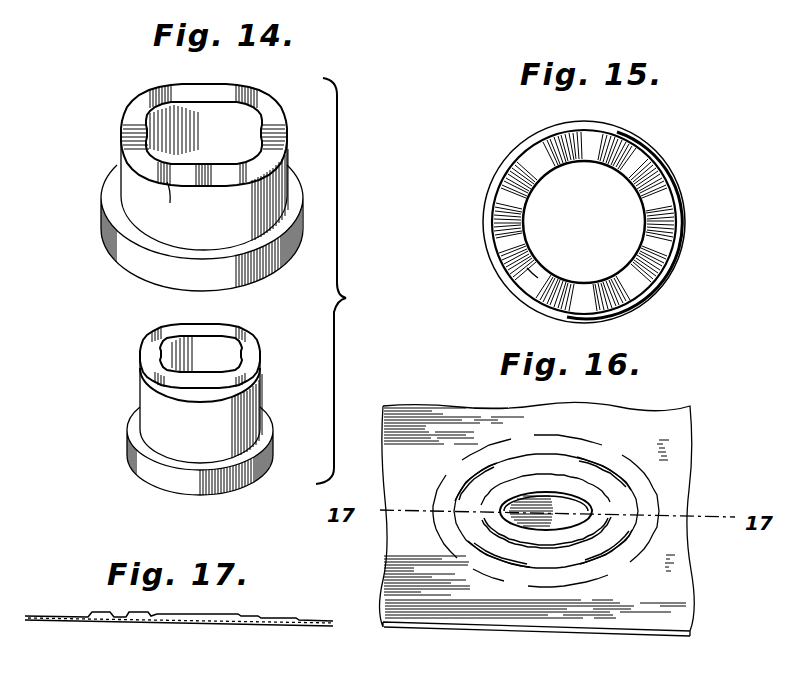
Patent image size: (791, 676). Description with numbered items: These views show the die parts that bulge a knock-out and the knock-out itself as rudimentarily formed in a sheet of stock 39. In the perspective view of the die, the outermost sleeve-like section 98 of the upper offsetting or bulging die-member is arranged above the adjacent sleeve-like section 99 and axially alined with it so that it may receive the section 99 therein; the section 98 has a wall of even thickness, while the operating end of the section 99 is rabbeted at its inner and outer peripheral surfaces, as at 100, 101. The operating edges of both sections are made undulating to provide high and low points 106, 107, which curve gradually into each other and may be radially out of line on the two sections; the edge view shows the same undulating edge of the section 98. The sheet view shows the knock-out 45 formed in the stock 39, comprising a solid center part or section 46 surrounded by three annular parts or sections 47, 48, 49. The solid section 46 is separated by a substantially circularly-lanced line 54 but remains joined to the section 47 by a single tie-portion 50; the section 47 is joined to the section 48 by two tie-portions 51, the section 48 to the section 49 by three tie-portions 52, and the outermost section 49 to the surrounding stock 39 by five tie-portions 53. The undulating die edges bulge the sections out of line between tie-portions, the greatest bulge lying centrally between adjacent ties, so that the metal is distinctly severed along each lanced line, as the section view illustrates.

In FIG. 16, the plate 39 is at (435, 612).
In FIG. 17, the plate 39 is at (55, 622).
In FIG. 16, the knock-out 45 is at (640, 542).
In FIG. 17, the knock-out 45 is at (218, 630).
In FIG. 16, the solid center part or section 46 is at (570, 495).
In FIG. 17, the solid center part or section 46 is at (197, 622).
In FIG. 16, the annular part or section 47 is at (547, 477).
In FIG. 17, the annular part or section 47 is at (250, 619).
In FIG. 16, the annular part or section 48 is at (458, 470).
In FIG. 17, the annular part or section 48 is at (272, 628).
In FIG. 16, the outermost annular part or section 49 is at (445, 518).
In FIG. 17, the outermost annular part or section 49 is at (290, 628).
In FIG. 16, the tie-portion 50 is at (543, 533).
In FIG. 16, the tie-portions 51 is at (603, 487).
In FIG. 16, the tie-portions 52 is at (533, 453).
In FIG. 16, the tie-portions 53 is at (462, 465).
In FIG. 16, the circularly-lanced line 54 is at (590, 503).
In FIG. 14, the outermost sleeve-like section 98 is at (138, 186).
In FIG. 15, the outermost sleeve-like section 98 is at (505, 213).
In FIG. 14, the sleeve-like section 99 is at (152, 407).
In FIG. 14, the rabbet 100 is at (210, 337).
In FIG. 14, the rabbet 101 is at (142, 378).
In FIG. 14, the high points 106 is at (250, 88).
In FIG. 15, the high points 106 is at (502, 247).
In FIG. 14, the low points 107 is at (272, 117).
In FIG. 15, the low points 107 is at (538, 278).